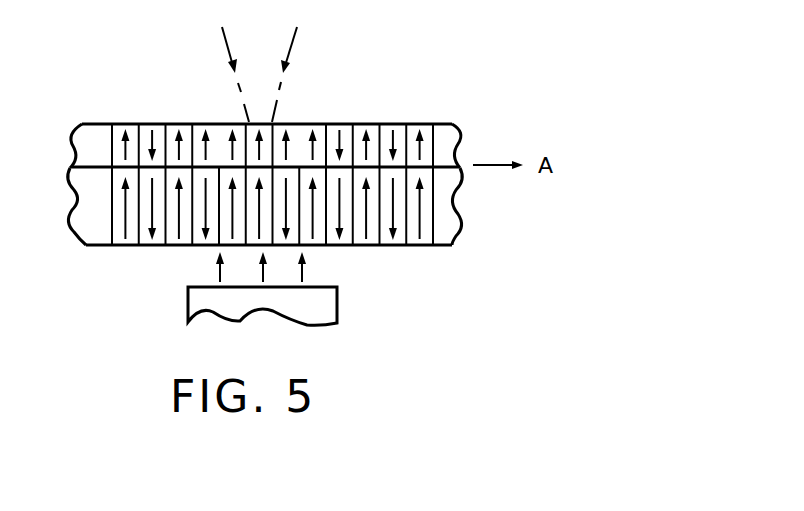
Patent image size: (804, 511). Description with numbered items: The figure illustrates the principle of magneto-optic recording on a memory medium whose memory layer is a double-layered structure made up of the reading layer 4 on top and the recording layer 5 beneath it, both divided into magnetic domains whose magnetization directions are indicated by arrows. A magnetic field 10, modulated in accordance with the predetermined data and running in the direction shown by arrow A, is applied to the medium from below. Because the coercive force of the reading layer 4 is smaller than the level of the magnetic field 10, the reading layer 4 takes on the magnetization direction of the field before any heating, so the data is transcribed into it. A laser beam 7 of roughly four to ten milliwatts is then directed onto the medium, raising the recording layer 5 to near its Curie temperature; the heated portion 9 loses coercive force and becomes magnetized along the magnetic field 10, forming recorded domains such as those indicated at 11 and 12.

The reading layer 4 is at (462, 136).
The recording layer 5 is at (463, 200).
The laser beam 7 is at (291, 49).
The portion subjected to elevated temperature 9 is at (289, 122).
The magnetic field 10 is at (320, 266).
The recorded domain 11 is at (323, 122).
The magnetic domain 12 is at (398, 122).